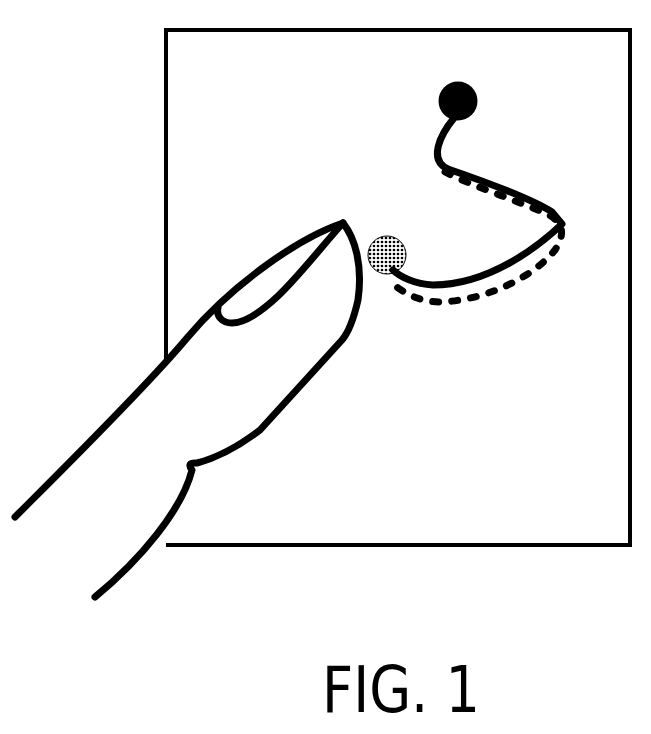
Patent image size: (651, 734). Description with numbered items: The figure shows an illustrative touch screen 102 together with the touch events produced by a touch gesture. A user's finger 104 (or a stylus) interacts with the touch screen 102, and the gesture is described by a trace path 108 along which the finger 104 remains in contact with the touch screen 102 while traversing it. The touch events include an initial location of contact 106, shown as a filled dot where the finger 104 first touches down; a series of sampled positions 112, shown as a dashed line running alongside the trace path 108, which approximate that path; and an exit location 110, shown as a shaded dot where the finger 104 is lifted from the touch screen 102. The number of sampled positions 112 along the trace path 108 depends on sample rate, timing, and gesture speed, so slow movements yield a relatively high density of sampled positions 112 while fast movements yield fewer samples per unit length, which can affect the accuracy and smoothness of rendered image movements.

The touch screen 102 is at (234, 71).
The finger 104 is at (245, 414).
The initial location of contact 106 is at (476, 100).
The trace path 108 is at (518, 182).
The exit location 110 is at (387, 262).
The sampled positions 112 is at (535, 272).